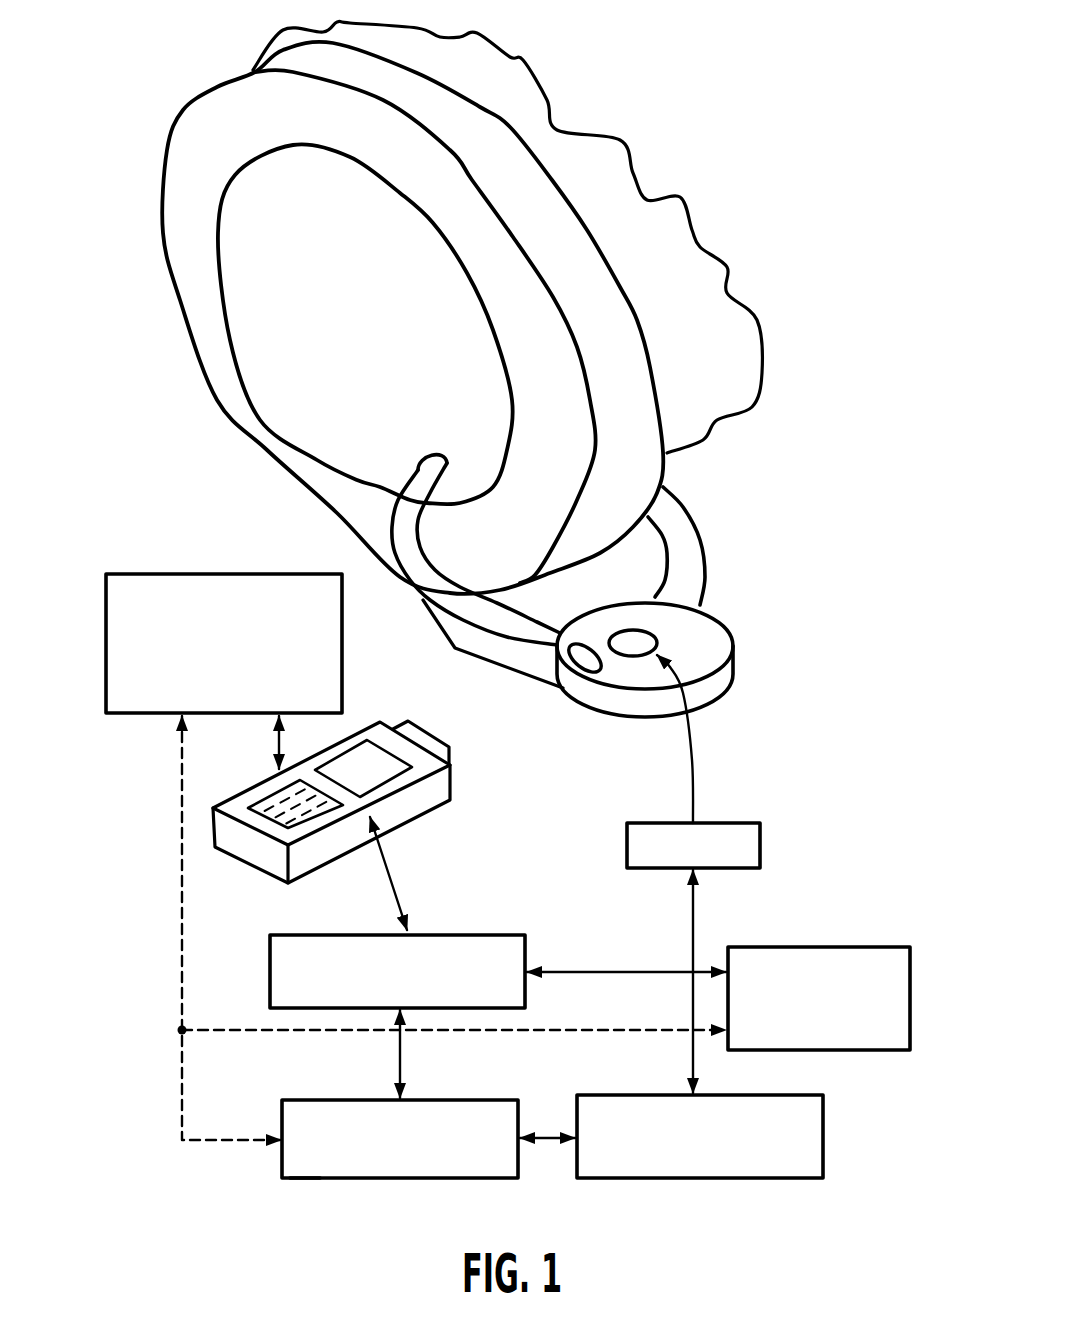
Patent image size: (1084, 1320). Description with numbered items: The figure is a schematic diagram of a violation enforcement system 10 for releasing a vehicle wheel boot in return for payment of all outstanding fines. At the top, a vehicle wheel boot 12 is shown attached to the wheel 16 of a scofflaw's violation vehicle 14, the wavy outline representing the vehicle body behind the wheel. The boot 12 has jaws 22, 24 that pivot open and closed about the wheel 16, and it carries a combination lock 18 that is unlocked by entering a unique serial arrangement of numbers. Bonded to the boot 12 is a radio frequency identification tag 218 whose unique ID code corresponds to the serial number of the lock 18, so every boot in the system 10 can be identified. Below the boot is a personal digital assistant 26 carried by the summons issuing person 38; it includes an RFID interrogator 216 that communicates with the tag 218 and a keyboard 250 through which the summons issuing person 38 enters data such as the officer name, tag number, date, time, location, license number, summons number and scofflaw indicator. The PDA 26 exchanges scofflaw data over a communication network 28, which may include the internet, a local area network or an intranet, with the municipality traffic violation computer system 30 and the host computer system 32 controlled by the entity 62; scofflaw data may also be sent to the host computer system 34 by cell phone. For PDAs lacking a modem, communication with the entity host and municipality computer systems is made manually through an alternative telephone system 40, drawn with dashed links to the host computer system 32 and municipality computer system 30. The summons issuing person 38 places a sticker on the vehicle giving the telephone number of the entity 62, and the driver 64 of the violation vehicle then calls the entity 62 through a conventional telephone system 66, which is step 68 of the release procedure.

The violation enforcement system 10 is at (783, 570).
The vehicle wheel boot 12 is at (714, 655).
The violation vehicle 14 is at (677, 252).
The wheel 16 is at (640, 390).
The combination lock 18 is at (630, 643).
The jaw 22 is at (420, 470).
The jaw 24 is at (683, 530).
The personal digital assistant 26 is at (374, 794).
The communication network 28 is at (493, 934).
The municipality traffic violation computer system 30 is at (807, 947).
The host computer system 32 is at (282, 1105).
The host computer system 34 is at (390, 882).
The summons issuing person 38 is at (180, 573).
The telephone system 40 is at (182, 971).
The entity 62 is at (303, 1181).
The driver 64 is at (761, 839).
The conventional telephone system 66 is at (825, 1137).
The step 68 is at (693, 917).
The RFID interrogator 216 is at (447, 733).
The radio frequency identification tag 218 is at (630, 693).
The keyboard 250 is at (310, 818).